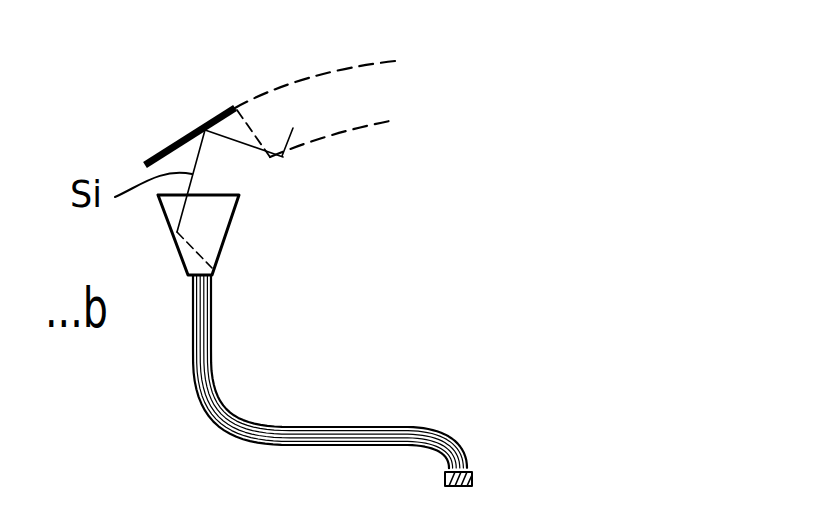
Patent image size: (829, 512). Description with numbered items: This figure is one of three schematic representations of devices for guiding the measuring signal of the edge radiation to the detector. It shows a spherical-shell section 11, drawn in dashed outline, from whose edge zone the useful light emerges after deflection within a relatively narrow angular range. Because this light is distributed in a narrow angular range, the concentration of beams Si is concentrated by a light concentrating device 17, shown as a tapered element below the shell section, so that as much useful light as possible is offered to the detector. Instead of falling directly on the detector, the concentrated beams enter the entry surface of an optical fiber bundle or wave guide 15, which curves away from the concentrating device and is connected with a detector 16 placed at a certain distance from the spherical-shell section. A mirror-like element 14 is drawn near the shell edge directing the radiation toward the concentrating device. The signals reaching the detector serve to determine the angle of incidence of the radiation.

The spherical-shell section 11 is at (347, 101).
The mirror 14 is at (179, 134).
The optical fiber bundle 15 is at (213, 368).
The detector 16 is at (473, 478).
The light concentrating device 17 is at (205, 228).